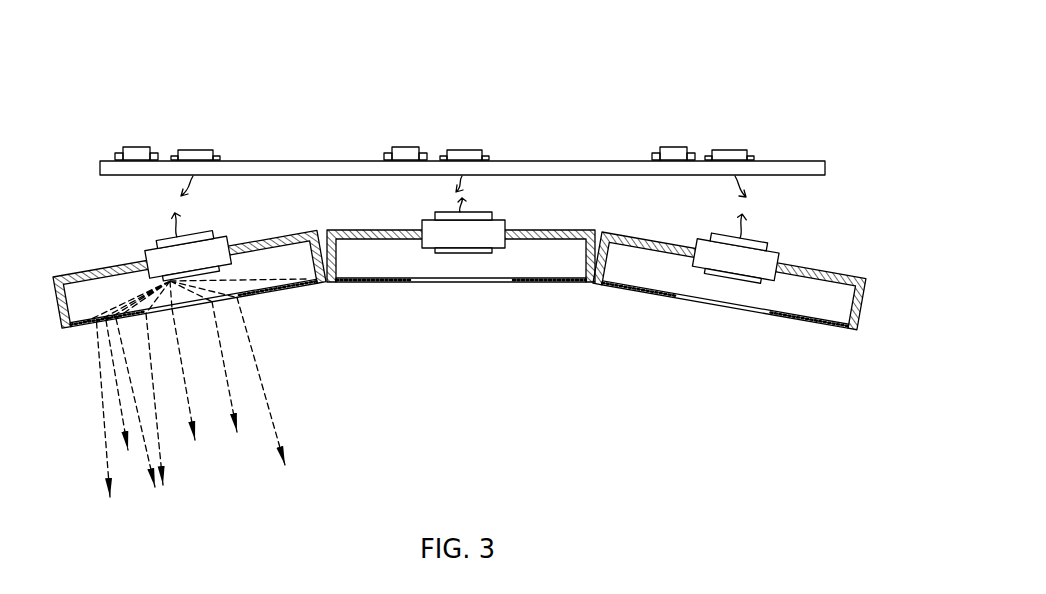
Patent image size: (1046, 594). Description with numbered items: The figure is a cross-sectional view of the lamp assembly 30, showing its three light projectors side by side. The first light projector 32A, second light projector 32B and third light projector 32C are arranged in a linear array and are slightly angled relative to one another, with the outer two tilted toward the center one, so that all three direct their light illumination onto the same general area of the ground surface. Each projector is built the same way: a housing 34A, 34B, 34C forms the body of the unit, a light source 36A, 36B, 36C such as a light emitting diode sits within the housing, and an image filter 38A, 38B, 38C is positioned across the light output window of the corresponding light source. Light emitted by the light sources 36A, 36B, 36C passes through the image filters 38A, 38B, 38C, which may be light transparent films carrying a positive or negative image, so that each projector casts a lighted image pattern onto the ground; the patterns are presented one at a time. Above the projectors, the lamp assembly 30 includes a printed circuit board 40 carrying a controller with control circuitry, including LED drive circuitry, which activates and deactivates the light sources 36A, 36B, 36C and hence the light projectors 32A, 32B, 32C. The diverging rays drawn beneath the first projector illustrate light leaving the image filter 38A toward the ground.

The lamp assembly 30 is at (462, 255).
The first light projector 32A is at (183, 344).
The second light projector 32B is at (477, 235).
The third light projector 32C is at (739, 291).
The housing 34A is at (100, 268).
The housing 34B is at (380, 230).
The housing 34C is at (660, 238).
The light source 36A is at (220, 233).
The light source 36B is at (495, 222).
The light source 36C is at (772, 247).
The image filter 38A is at (267, 293).
The image filter 38B is at (540, 285).
The image filter 38C is at (802, 318).
The printed circuit board 40 is at (800, 162).